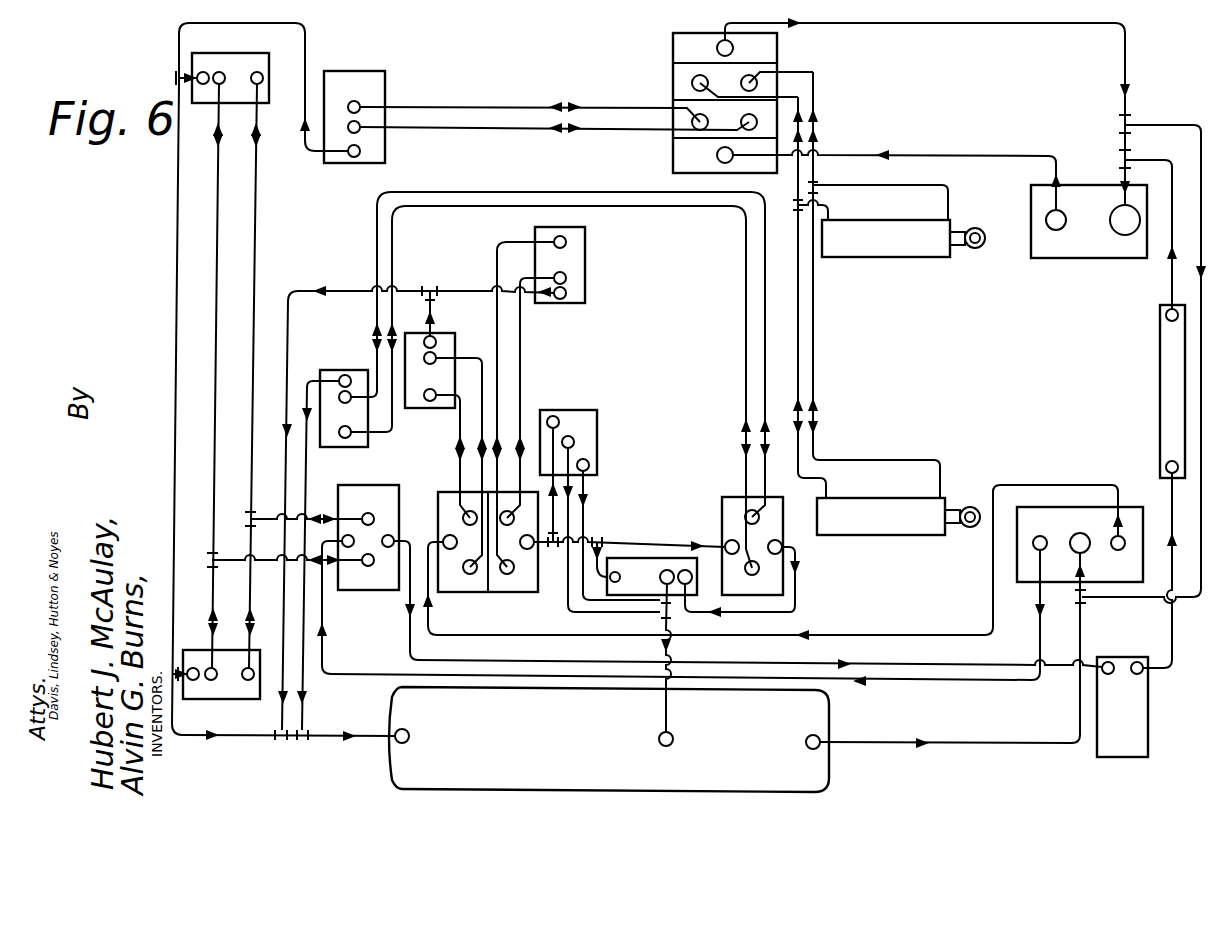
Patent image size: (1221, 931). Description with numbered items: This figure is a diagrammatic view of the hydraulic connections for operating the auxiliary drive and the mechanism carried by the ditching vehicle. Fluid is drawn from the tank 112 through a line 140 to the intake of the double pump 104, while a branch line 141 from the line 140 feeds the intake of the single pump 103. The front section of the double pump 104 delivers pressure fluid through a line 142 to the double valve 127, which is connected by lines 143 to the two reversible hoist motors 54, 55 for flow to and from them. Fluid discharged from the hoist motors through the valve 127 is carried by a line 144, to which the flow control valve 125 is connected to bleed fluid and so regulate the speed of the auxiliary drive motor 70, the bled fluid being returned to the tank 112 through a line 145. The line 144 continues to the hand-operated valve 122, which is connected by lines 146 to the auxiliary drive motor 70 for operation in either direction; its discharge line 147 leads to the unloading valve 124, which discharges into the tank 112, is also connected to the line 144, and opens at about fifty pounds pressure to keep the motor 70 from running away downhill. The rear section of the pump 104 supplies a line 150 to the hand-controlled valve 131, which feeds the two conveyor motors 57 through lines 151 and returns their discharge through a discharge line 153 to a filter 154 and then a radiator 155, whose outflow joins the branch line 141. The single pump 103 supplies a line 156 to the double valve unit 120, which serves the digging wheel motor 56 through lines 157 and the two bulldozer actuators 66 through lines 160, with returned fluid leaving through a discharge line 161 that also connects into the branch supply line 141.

The hydraulic motor 54 is at (590, 290).
The hydraulic motor 55 is at (422, 401).
The hydraulic motor 56 is at (372, 84).
The hydraulic motors 57 is at (233, 65).
The hydraulic actuators 66 is at (902, 248).
The motor of the auxiliary drive 70 is at (332, 370).
The single pump 103 is at (1048, 250).
The double pump 104 is at (1077, 505).
The tank 112 is at (790, 765).
The double valve unit 120 is at (780, 52).
The hand-operated valve 122 is at (730, 507).
The unloading valve 124 is at (650, 560).
The flow control valve 125 is at (598, 428).
The double valve 127 is at (472, 588).
The hand-controlled valve 131 is at (383, 590).
The line 140 is at (992, 747).
The branch line 141 is at (1132, 600).
The line 142 is at (922, 635).
The lines 143 is at (521, 402).
The line 144 is at (545, 550).
The line 145 is at (585, 520).
The lines 146 is at (765, 349).
The discharge line 147 is at (793, 588).
The line 150 is at (940, 684).
The lines 151 is at (255, 258).
The discharge line 153 is at (405, 645).
The filter 154 is at (1133, 737).
The radiator 155 is at (1160, 357).
The line 156 is at (950, 155).
The lines 157 is at (480, 127).
The lines 160 is at (800, 353).
The discharge line 161 is at (940, 23).